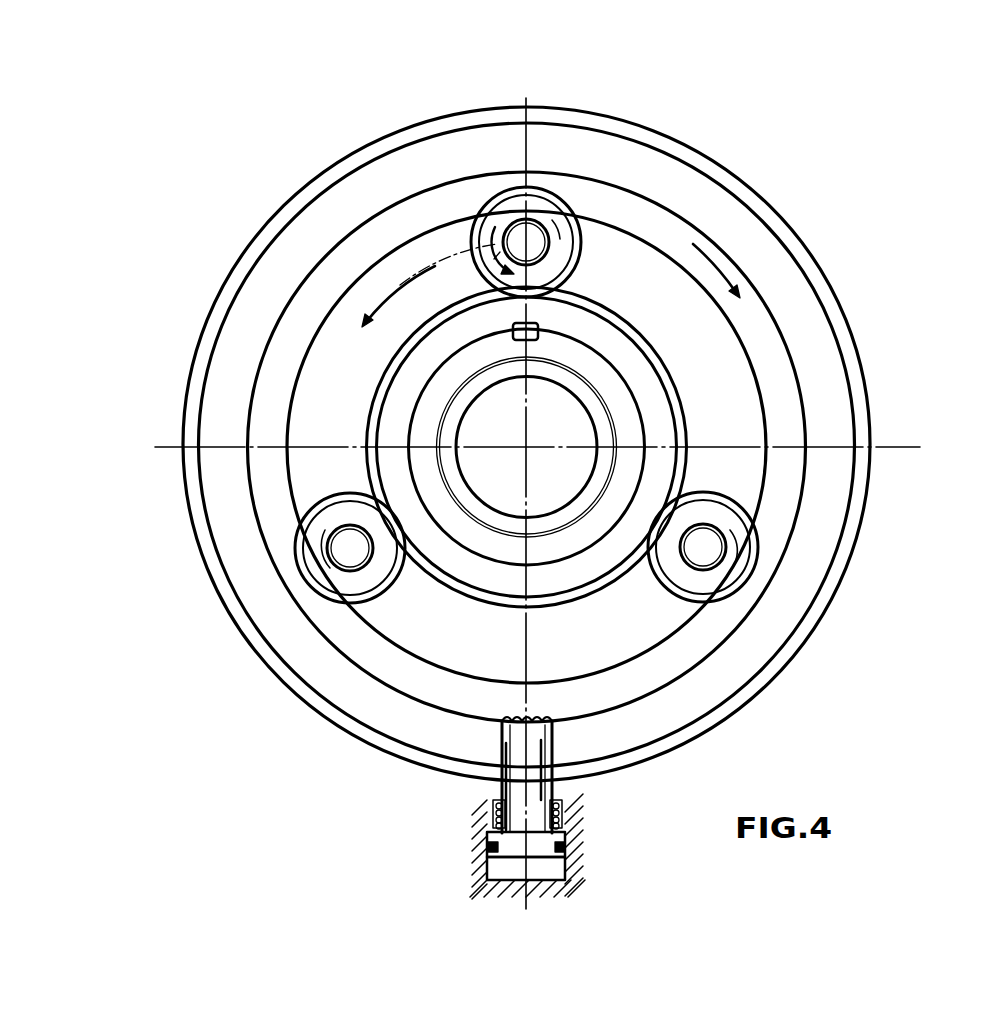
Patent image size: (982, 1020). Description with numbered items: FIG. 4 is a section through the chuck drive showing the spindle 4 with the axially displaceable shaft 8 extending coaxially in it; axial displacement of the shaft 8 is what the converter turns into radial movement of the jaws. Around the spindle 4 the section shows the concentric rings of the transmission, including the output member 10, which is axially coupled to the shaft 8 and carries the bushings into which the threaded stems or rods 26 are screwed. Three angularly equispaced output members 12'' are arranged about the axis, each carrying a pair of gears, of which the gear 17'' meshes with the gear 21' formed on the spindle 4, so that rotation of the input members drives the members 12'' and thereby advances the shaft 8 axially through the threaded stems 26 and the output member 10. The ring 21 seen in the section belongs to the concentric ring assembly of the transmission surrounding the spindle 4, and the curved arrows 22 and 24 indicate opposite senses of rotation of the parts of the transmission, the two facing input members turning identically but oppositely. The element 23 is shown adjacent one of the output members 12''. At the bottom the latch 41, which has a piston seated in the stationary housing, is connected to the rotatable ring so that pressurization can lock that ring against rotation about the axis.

The spindle 4 is at (462, 367).
The shaft 8 is at (467, 503).
The output member 10 is at (713, 337).
The output member 12'' is at (520, 401).
The gear 17'' is at (543, 367).
The hub ring 21 is at (557, 447).
The gear 21' is at (565, 447).
The direction of rotation arrow 22 is at (728, 250).
The pin 23 is at (494, 259).
The direction of rotation arrow 24 is at (410, 280).
The stem or rod 26 is at (534, 226).
The latch 41 is at (507, 745).